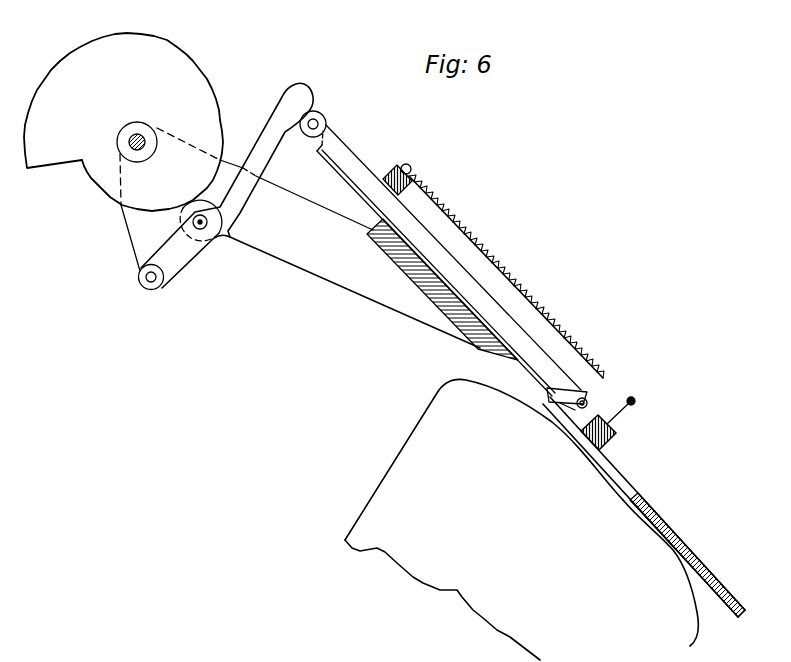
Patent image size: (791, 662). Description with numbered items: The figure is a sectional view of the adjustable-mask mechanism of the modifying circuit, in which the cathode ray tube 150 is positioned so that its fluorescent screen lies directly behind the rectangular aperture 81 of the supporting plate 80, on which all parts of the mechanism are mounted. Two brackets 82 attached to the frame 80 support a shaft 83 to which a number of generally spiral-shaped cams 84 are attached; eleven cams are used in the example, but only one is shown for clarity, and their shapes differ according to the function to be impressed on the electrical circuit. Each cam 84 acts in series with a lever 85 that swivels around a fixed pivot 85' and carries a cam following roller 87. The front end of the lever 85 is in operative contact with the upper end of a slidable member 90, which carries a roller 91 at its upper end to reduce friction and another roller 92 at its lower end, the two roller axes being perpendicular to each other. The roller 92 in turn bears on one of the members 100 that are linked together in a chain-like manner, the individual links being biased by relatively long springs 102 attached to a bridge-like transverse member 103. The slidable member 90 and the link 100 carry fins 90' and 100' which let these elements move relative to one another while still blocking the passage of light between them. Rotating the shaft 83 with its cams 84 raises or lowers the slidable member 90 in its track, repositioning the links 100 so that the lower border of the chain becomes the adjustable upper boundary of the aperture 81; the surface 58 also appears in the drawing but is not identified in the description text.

The cam disc 84 is at (183, 64).
The shaft 83 is at (144, 134).
The lever arm 85 is at (227, 185).
The pivot pin 85' is at (145, 236).
The roller 87 is at (211, 242).
The link 82 is at (335, 281).
The pivot 91 is at (322, 116).
The slide bar 90 is at (449, 260).
The slider block 90' is at (442, 289).
The stop 103 is at (396, 166).
The rack 102 is at (473, 236).
The head 92 is at (582, 394).
The adjusting knob 100 is at (617, 423).
The adjusting screw 100' is at (543, 425).
The rod 81 is at (634, 498).
The threaded end 80 is at (688, 548).
The curved surface 58 is at (661, 540).
The housing 150 is at (403, 448).